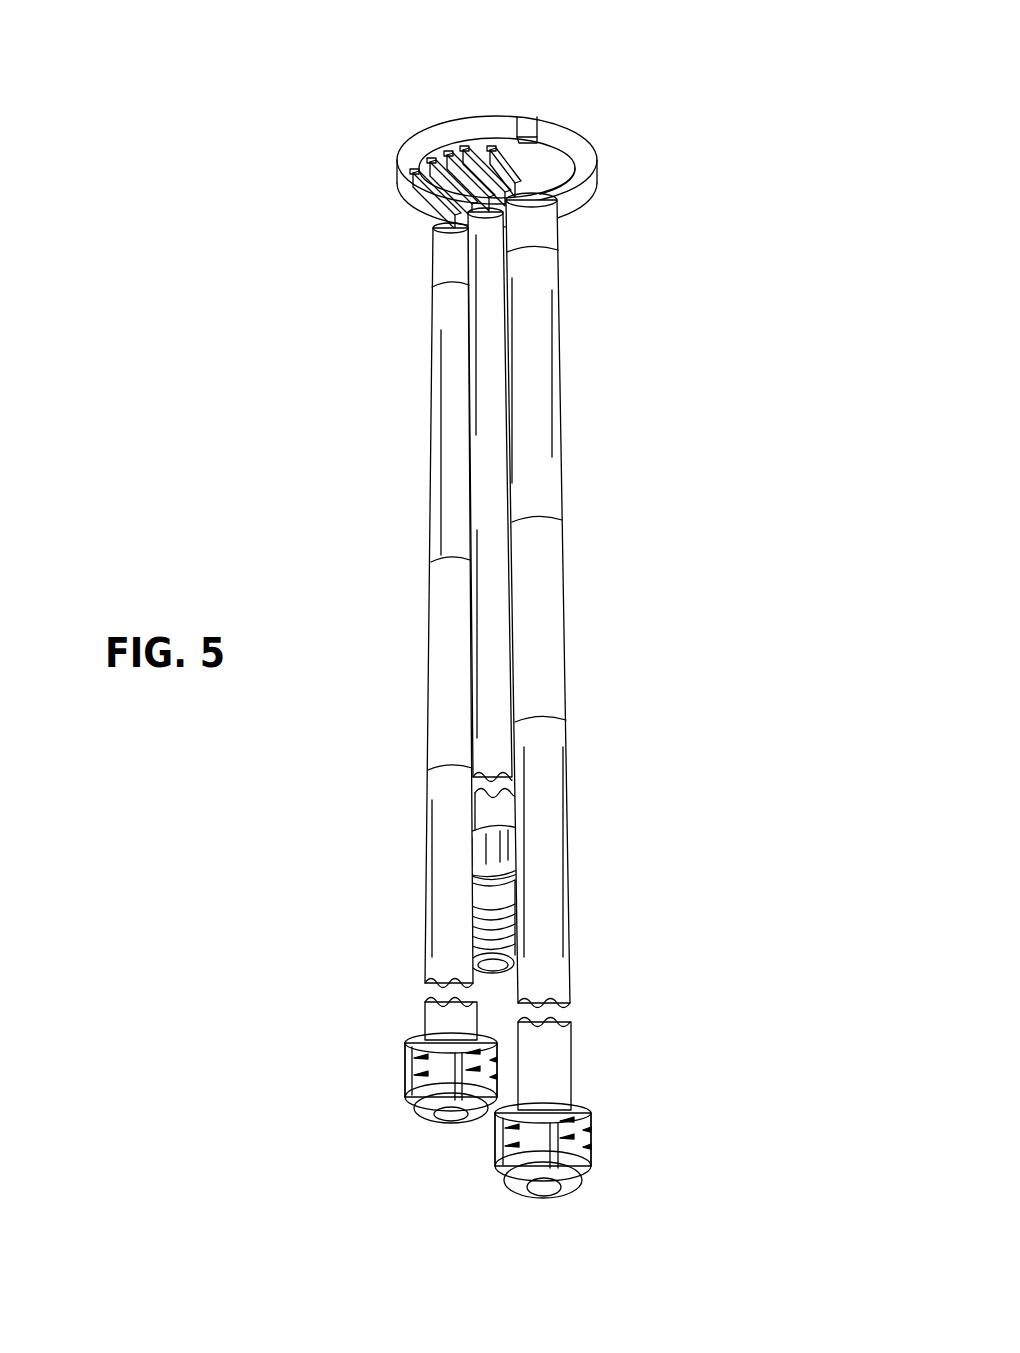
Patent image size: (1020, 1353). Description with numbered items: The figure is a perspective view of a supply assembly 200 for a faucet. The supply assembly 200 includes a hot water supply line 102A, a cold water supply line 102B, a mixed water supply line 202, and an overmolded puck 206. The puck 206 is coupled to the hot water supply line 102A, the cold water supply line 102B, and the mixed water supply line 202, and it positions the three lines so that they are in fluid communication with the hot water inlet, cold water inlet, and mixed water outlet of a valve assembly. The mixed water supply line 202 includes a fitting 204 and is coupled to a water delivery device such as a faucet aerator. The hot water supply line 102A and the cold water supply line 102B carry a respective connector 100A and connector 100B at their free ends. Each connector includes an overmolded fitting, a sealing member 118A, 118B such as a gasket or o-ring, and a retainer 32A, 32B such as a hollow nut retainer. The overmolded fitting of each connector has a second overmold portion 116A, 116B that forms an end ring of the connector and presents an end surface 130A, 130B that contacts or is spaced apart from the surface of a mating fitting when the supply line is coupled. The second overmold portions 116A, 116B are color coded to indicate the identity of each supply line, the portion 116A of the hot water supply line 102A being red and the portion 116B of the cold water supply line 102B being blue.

The supply assembly 200 is at (666, 124).
The overmolded puck 206 is at (398, 136).
The mixed water supply line 202 is at (508, 624).
The fitting 204 is at (470, 900).
The hot water supply line 102A is at (558, 481).
The cold water supply line 102B is at (433, 519).
The connector 100A is at (615, 1160).
The connector 100B is at (370, 1098).
The retainer 32A is at (581, 1108).
The retainer 32B is at (407, 1050).
The second overmold portion 116A is at (574, 1175).
The second overmold portion 116B is at (468, 1110).
The sealing member 118A is at (512, 1193).
The sealing member 118B is at (418, 1122).
The end surface 130A is at (560, 1203).
The end surface 130B is at (433, 1128).